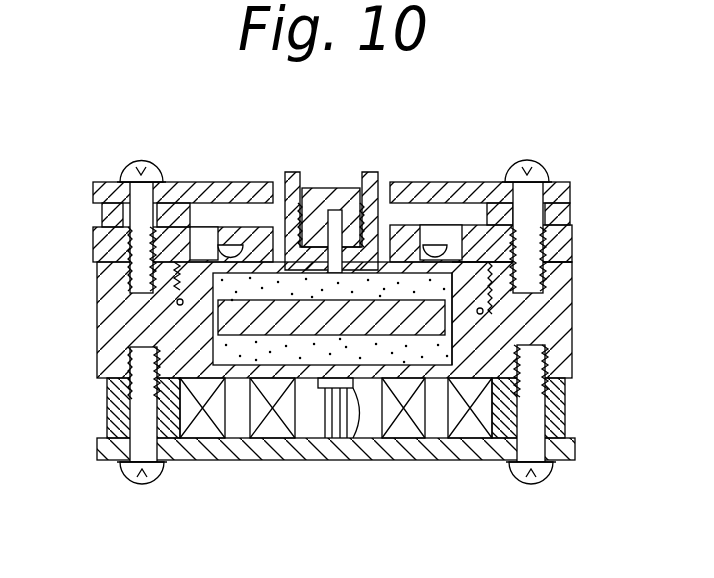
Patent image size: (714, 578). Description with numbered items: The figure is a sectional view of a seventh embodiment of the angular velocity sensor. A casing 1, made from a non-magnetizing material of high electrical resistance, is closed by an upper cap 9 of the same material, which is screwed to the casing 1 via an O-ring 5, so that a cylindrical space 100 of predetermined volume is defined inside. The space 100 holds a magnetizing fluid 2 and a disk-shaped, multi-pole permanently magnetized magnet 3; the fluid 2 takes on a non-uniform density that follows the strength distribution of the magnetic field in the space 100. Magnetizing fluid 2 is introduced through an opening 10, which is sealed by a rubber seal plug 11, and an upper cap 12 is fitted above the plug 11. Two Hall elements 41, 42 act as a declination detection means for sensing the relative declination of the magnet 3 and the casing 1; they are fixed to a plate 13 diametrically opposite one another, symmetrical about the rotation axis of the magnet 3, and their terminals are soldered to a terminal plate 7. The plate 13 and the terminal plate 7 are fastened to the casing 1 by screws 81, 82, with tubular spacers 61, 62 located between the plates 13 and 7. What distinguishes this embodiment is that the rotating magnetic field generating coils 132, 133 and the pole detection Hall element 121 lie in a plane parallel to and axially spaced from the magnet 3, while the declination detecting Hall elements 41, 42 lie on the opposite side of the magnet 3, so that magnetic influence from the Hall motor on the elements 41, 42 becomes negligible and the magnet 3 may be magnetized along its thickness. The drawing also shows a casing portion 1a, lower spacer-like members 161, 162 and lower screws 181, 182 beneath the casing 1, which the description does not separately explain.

The casing 1 is at (557, 342).
The recess of base body 1a is at (475, 328).
The magnetizing fluid 2 is at (243, 230).
The permanent magnet 3 is at (404, 300).
The O-ring 5 is at (505, 312).
The terminal plate 7 is at (93, 190).
The upper cap 9 is at (480, 262).
The opening 10 is at (308, 190).
The seal plug 11 is at (334, 212).
The upper cap 12 is at (371, 172).
The plate 13 is at (572, 240).
The Hall element 41 is at (230, 245).
The Hall element 42 is at (440, 250).
The spacer 61 is at (103, 222).
The spacer 62 is at (572, 212).
The screw 81 is at (141, 161).
The screw 82 is at (530, 161).
The cylindrical space 100 is at (283, 290).
The pole detection Hall element 121 is at (355, 440).
The rotating magnetic field generating coil 132 is at (272, 432).
The rotating magnetic field generating coil 133 is at (455, 435).
The lower spacer 161 is at (107, 420).
The lower spacer 162 is at (567, 408).
The lower screw 181 is at (140, 485).
The lower screw 182 is at (548, 485).